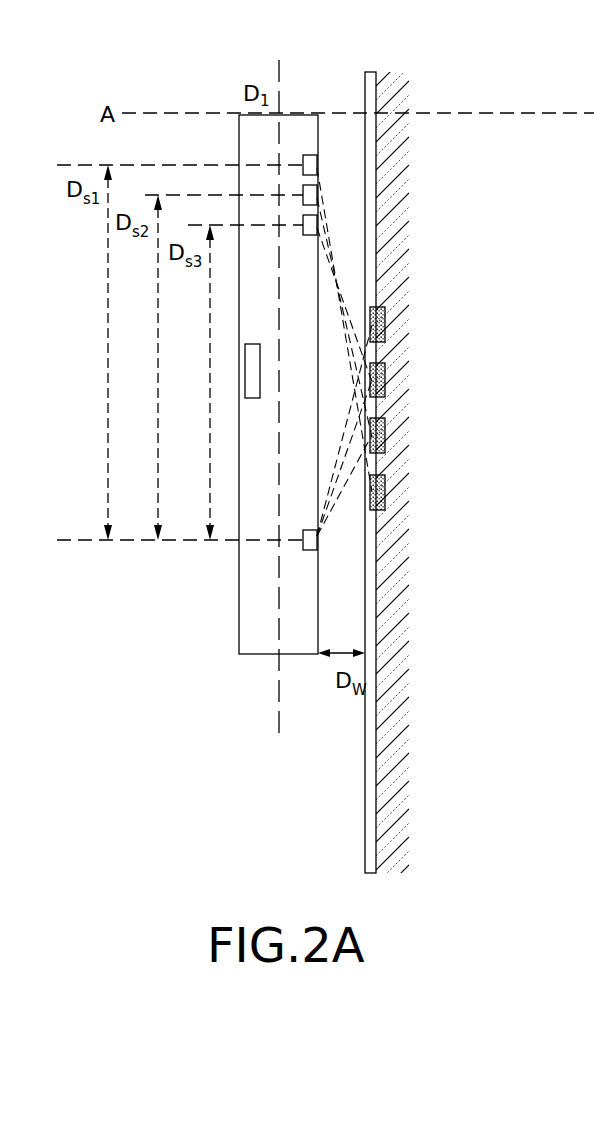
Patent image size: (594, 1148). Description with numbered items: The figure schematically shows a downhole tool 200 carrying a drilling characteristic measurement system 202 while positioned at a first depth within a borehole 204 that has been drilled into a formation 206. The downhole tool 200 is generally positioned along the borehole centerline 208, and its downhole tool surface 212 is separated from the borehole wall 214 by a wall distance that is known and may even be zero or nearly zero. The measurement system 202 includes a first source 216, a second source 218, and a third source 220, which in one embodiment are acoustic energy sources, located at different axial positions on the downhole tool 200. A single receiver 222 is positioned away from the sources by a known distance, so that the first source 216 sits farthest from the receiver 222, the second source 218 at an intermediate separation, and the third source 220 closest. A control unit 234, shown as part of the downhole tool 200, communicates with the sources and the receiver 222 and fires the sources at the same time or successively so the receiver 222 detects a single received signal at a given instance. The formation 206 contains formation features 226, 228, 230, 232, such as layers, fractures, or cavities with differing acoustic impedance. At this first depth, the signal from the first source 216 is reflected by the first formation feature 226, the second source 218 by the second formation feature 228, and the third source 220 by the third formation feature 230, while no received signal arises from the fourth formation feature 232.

The downhole tool 200 is at (258, 645).
The drilling characteristic measurement system 202 is at (252, 440).
The borehole 204 is at (269, 826).
The formation 206 is at (470, 736).
The borehole centerline 208 is at (303, 425).
The downhole tool surface 212 is at (328, 606).
The borehole wall 214 is at (363, 812).
The first source 216 is at (317, 165).
The second source 218 is at (317, 195).
The third source 220 is at (317, 225).
The receiver 222 is at (317, 545).
The first formation feature 226 is at (385, 330).
The second formation feature 228 is at (385, 385).
The third formation feature 230 is at (385, 440).
The fourth formation feature 232 is at (385, 497).
The control unit 234 is at (253, 372).